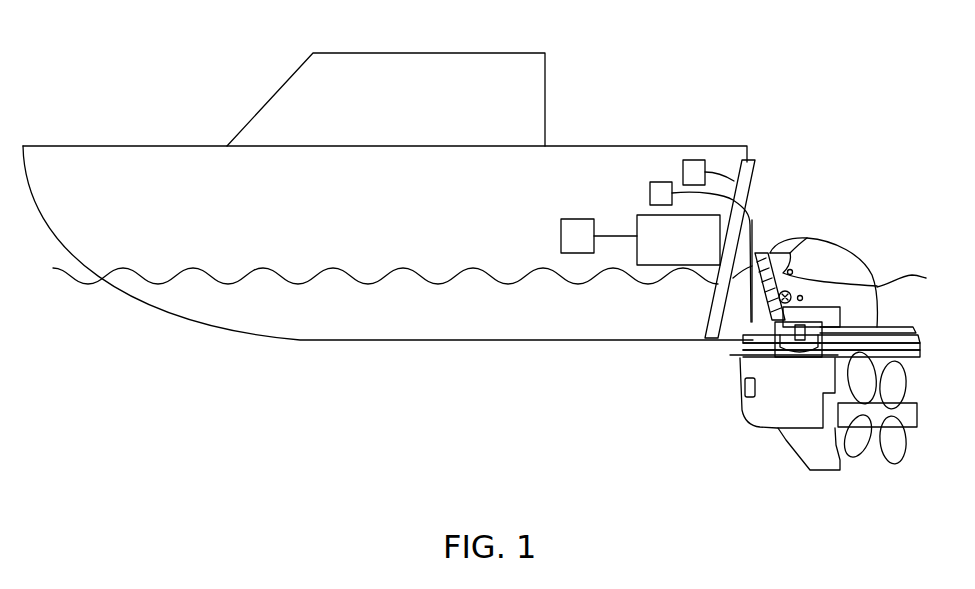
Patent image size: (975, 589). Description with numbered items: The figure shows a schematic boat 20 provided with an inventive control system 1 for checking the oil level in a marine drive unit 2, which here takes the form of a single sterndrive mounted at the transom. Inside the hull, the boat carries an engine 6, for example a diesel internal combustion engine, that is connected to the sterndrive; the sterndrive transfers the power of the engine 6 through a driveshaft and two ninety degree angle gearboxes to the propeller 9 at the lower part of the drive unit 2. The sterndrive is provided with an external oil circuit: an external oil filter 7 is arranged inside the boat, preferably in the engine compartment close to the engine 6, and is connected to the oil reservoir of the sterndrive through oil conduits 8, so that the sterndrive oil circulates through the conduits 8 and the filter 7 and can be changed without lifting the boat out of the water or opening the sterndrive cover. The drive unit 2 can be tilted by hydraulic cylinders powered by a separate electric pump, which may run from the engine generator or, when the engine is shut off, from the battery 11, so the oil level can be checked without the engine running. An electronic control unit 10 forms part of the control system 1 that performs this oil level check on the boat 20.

The control system 1 is at (827, 183).
The marine drive unit 2 is at (818, 264).
The engine 6 is at (677, 248).
The oil filter 7 is at (661, 193).
The oil conduit 8 is at (719, 196).
The propeller 9 is at (866, 442).
The electronic control unit 10 is at (697, 175).
The battery 11 is at (575, 226).
The boat 20 is at (622, 113).